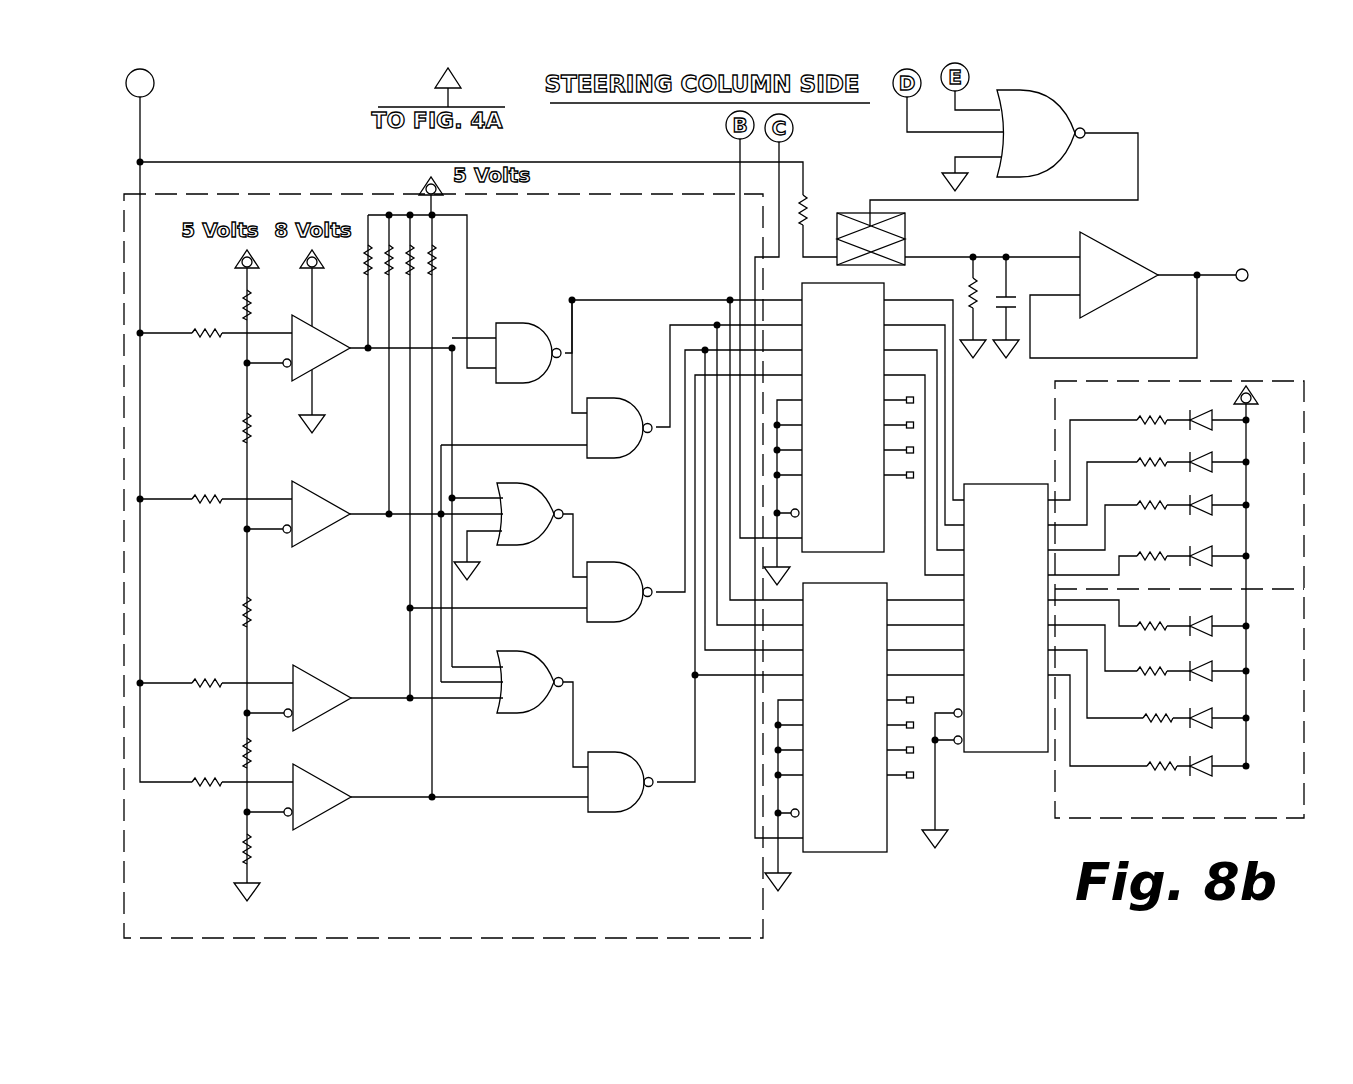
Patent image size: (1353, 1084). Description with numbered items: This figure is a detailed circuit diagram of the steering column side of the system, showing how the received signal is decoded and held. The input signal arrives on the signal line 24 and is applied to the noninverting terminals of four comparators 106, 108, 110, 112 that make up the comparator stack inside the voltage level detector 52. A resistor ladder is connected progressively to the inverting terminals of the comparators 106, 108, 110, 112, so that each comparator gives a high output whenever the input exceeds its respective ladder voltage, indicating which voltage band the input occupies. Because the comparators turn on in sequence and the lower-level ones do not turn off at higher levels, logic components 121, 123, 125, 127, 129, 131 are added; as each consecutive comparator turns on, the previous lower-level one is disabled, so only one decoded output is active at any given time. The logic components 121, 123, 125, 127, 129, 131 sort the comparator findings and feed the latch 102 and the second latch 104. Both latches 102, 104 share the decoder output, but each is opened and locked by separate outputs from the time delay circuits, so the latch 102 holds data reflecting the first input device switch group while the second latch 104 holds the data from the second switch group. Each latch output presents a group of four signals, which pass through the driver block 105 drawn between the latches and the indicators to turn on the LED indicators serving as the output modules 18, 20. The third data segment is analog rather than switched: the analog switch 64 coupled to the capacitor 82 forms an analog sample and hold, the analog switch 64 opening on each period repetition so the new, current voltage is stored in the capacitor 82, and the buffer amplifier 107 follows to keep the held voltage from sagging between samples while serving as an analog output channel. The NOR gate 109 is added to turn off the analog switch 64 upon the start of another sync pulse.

The signal line 24 is at (140, 137).
The voltage level detector 52 is at (240, 194).
The comparator 106 is at (318, 350).
The comparator 108 is at (313, 512).
The comparator 110 is at (323, 702).
The comparator 112 is at (323, 800).
The logic component 121 is at (510, 338).
The logic component 123 is at (617, 413).
The logic component 125 is at (517, 490).
The logic component 127 is at (628, 587).
The logic component 129 is at (528, 677).
The logic component 131 is at (623, 773).
The latch 102 is at (863, 503).
The second latch 104 is at (857, 838).
The decoder/driver 105 is at (1000, 494).
The NOR gate 109 is at (1030, 120).
The analog switch 64 is at (893, 253).
The capacitor 82 is at (1013, 292).
The buffer amplifier 107 is at (1112, 275).
The output module 18 is at (1302, 428).
The output module 20 is at (1304, 752).